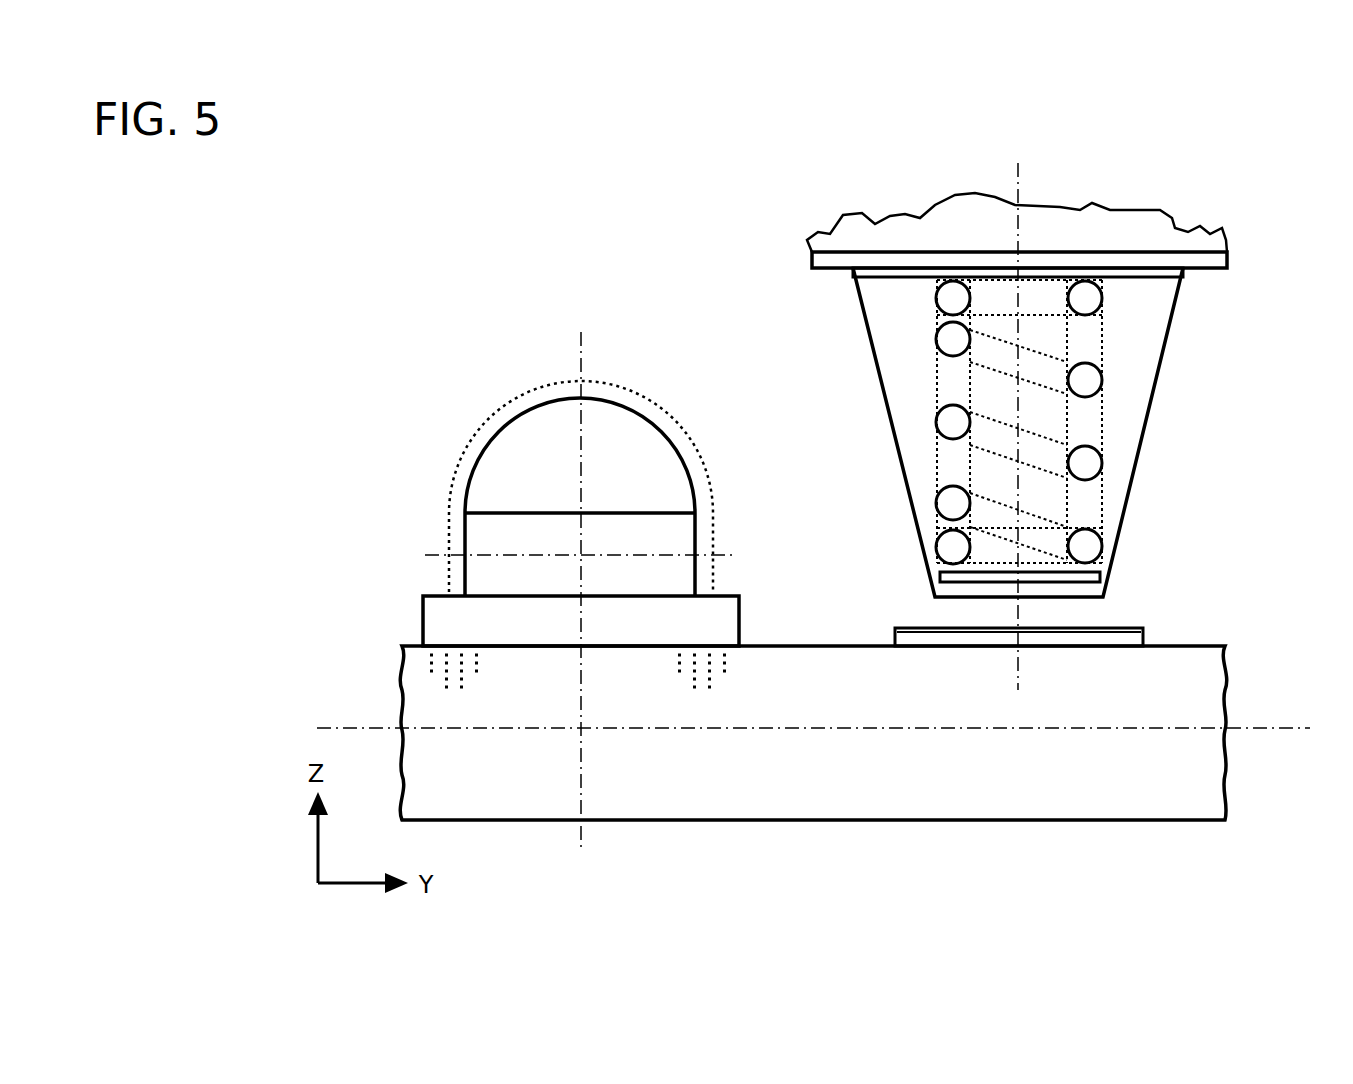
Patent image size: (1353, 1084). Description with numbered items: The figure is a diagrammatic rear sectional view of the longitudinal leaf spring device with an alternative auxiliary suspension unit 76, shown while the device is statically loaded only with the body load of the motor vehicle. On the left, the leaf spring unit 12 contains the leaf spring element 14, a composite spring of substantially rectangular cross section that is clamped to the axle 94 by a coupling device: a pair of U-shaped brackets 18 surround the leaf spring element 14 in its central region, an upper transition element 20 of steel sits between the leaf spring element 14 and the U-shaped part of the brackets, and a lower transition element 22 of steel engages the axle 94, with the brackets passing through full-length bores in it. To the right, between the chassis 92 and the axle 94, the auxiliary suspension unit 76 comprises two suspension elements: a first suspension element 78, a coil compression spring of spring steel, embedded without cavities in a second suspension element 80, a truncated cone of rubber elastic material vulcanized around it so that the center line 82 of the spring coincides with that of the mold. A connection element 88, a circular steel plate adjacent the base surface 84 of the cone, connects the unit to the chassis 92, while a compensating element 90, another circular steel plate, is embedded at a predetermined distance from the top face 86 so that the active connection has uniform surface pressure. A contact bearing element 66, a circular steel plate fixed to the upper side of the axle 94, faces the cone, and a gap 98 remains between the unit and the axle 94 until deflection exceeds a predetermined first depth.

The leaf spring unit 12 is at (424, 334).
The leaf spring element 14 is at (482, 538).
The U-shaped brackets 18 is at (543, 397).
The upper transition element 20 is at (640, 448).
The lower transition element 22 is at (453, 625).
The contact bearing element 66 is at (1117, 638).
The auxiliary suspension unit 76 is at (1222, 198).
The first suspension element 78 is at (1085, 380).
The second suspension element 80 is at (900, 377).
The center line 82 is at (1018, 188).
The base surface 84 is at (893, 277).
The top face 86 is at (988, 600).
The connection element 88 is at (1058, 265).
The compensating element 90 is at (937, 578).
The chassis 92 is at (893, 240).
The axle 94 is at (1150, 795).
The gap 98 is at (1047, 617).